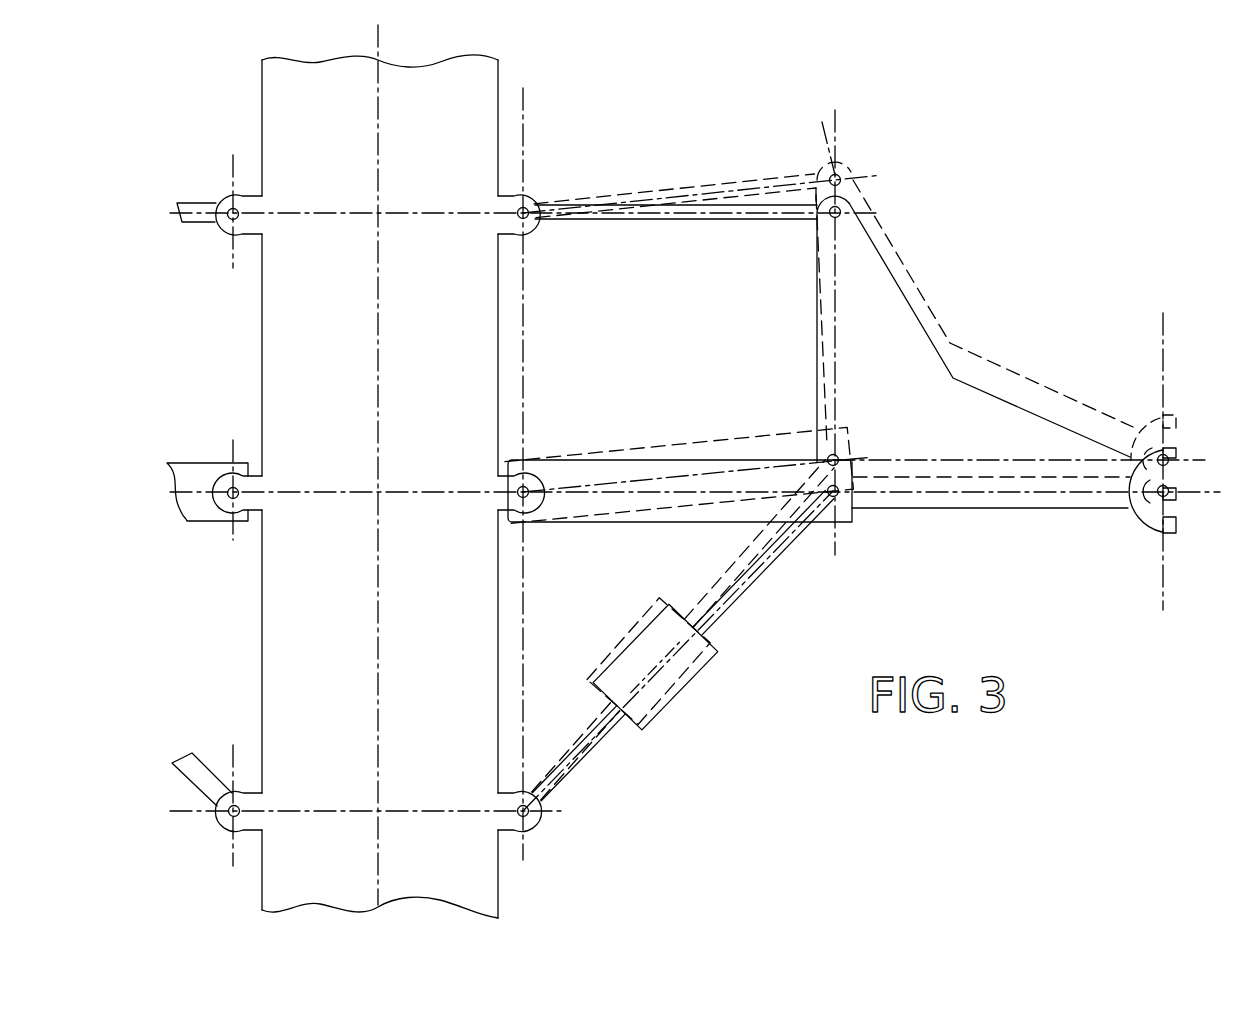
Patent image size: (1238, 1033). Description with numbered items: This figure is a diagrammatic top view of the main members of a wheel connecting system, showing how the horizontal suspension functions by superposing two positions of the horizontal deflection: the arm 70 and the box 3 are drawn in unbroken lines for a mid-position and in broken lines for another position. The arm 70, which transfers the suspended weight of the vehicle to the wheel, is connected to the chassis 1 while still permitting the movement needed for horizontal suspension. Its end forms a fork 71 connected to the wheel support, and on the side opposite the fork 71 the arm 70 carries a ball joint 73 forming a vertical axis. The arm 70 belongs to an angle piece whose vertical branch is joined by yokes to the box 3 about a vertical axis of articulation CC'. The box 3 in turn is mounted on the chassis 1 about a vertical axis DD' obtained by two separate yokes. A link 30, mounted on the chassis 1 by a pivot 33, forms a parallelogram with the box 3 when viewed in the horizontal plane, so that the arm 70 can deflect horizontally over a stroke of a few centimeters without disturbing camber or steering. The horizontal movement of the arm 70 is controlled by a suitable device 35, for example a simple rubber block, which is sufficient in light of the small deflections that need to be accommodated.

The chassis 1 is at (408, 117).
The box 3 is at (683, 485).
The link 30 is at (695, 207).
The pivot 33 is at (530, 204).
The device 35 is at (665, 678).
The arm 70 is at (910, 342).
The fork 71 is at (1142, 527).
The ball joint 73 is at (847, 201).
The vertical axis of articulation CC' is at (881, 516).
The vertical axis DD' is at (554, 455).